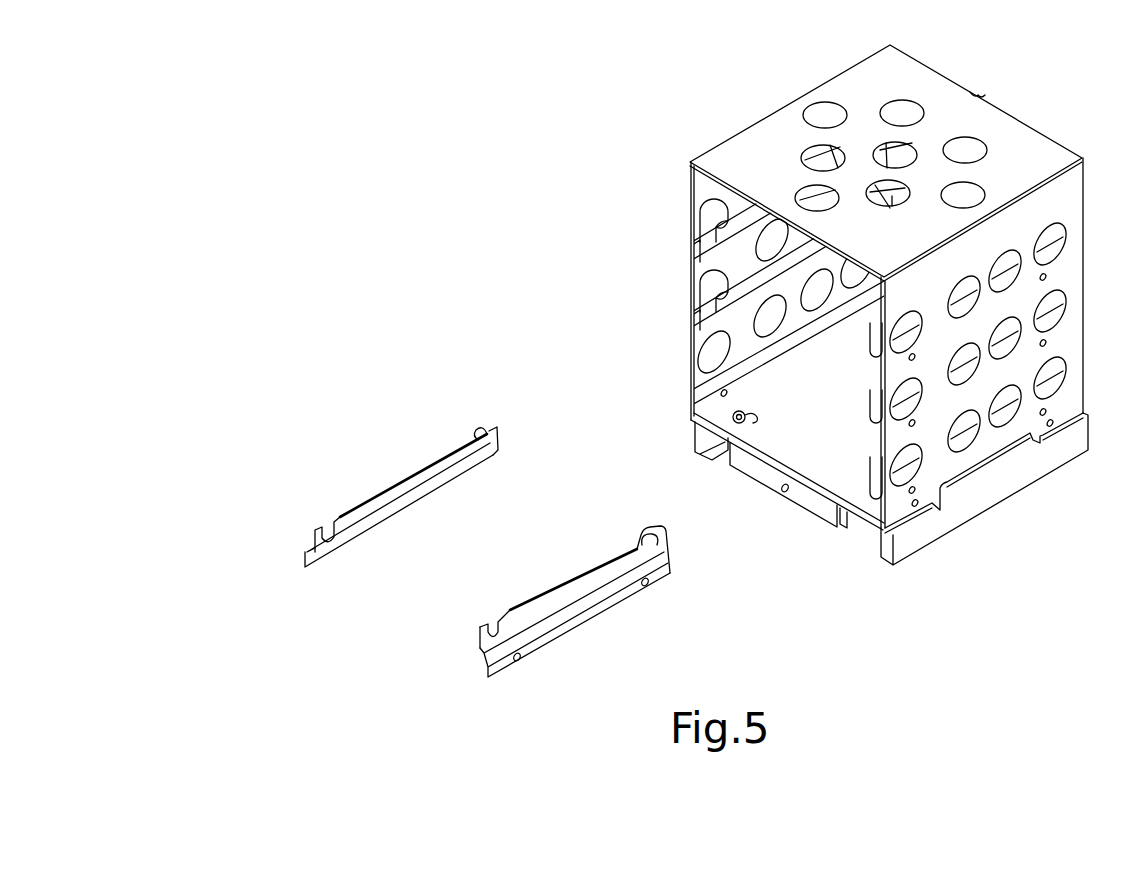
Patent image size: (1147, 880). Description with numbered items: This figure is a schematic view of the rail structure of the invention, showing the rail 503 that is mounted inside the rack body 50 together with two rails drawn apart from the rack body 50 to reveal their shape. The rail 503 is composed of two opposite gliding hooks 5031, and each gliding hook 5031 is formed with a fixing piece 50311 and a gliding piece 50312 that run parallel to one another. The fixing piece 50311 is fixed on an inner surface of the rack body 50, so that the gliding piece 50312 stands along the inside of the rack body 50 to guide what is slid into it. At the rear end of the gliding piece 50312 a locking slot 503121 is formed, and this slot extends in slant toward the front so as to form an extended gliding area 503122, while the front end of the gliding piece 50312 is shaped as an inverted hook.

The rack body 50 is at (1017, 155).
The rail 503 is at (504, 582).
The gliding hook 5031 is at (567, 582).
The fixing piece 50311 is at (543, 637).
The gliding piece 50312 is at (601, 552).
The locking slot 503121 is at (495, 625).
The extended gliding area 503122 is at (571, 580).